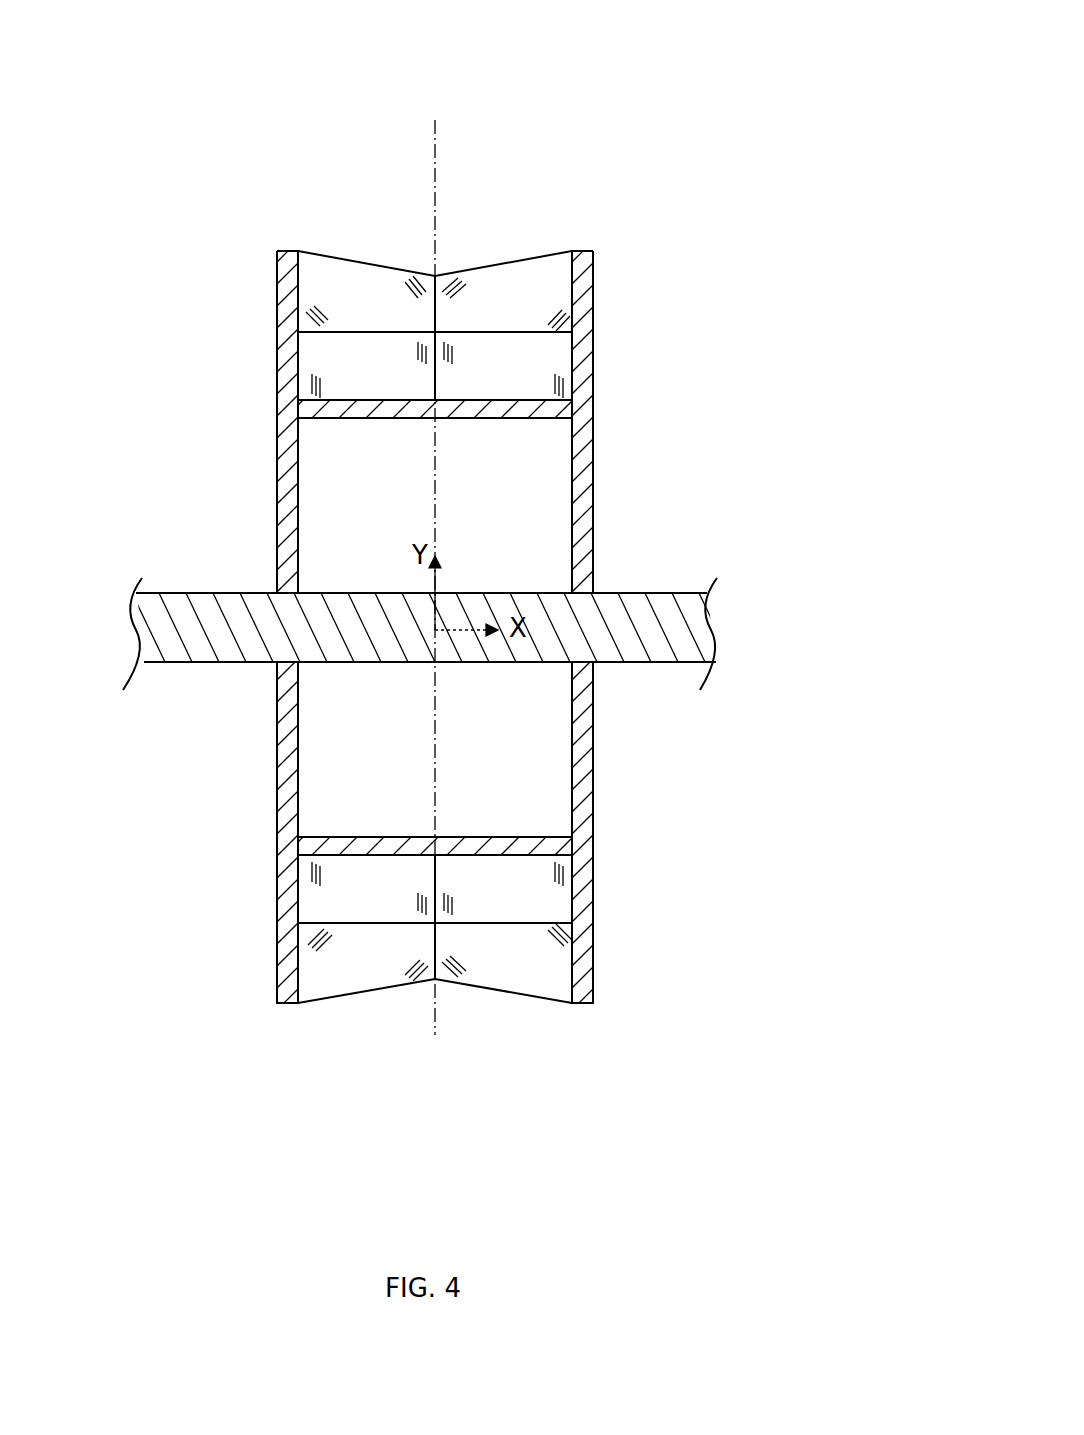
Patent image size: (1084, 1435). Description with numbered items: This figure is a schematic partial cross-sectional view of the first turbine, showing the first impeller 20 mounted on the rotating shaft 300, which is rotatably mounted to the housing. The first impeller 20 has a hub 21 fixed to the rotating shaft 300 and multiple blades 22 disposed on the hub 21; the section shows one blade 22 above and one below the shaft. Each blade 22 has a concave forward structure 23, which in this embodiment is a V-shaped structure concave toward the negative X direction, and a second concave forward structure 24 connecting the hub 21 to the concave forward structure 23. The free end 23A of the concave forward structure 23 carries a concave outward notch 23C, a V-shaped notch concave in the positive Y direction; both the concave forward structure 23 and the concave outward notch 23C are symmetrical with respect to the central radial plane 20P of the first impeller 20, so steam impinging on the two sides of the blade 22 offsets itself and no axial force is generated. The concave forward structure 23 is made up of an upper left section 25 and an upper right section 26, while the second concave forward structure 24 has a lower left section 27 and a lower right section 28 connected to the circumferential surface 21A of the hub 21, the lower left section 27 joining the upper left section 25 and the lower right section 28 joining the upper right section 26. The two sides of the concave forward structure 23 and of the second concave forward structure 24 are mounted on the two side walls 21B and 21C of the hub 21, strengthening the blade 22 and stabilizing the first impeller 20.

The first impeller 20 is at (428, 62).
The central radial plane 20P is at (434, 139).
The hub 21 is at (508, 396).
The circumferential surface 21A is at (397, 398).
The side wall 21B is at (280, 273).
The side wall 21C is at (580, 275).
The blade 22 is at (503, 256).
The concave forward structure 23 is at (769, 118).
The free end 23A is at (402, 260).
The concave outward notch 23C is at (443, 256).
The second concave forward structure 24 is at (769, 190).
The upper left section 25 is at (310, 295).
The upper right section 26 is at (560, 293).
The lower left section 27 is at (312, 365).
The lower right section 28 is at (562, 367).
The rotating shaft 300 is at (173, 602).